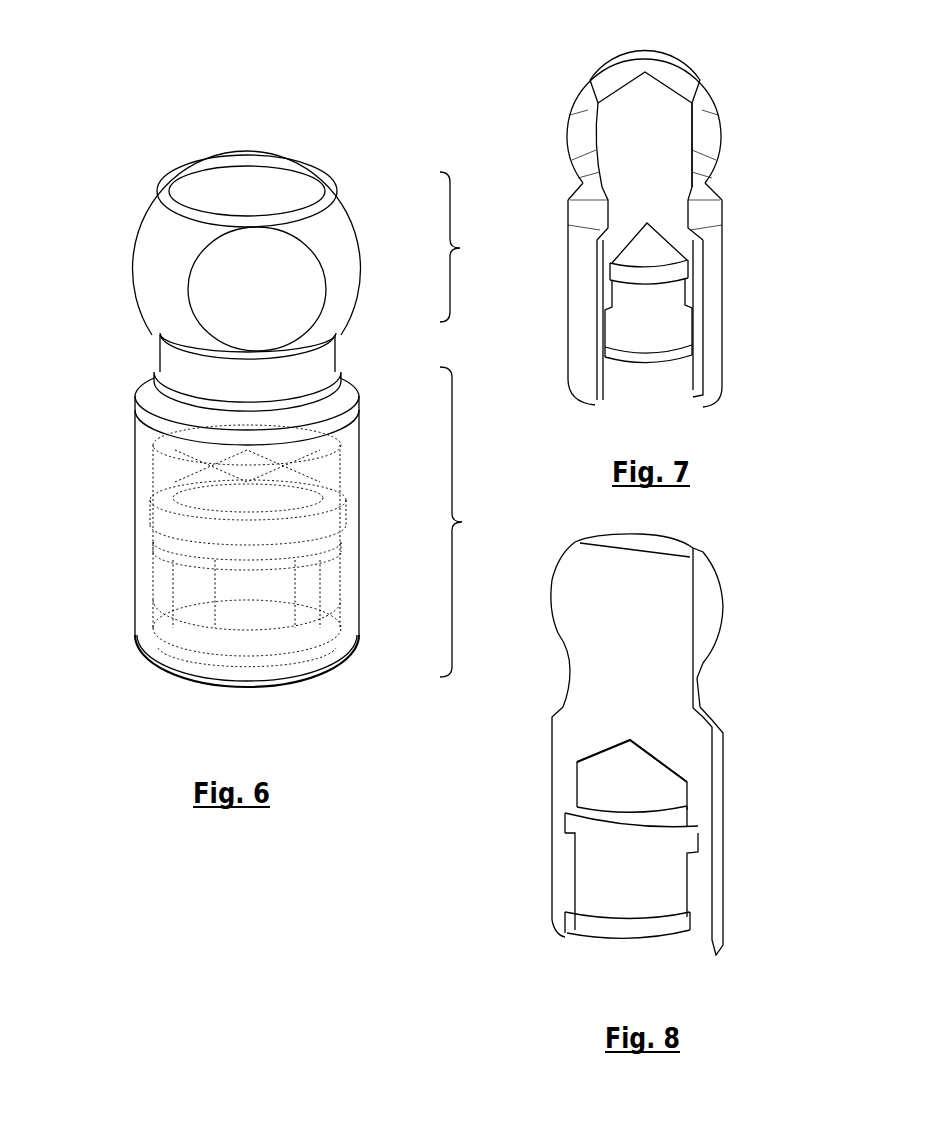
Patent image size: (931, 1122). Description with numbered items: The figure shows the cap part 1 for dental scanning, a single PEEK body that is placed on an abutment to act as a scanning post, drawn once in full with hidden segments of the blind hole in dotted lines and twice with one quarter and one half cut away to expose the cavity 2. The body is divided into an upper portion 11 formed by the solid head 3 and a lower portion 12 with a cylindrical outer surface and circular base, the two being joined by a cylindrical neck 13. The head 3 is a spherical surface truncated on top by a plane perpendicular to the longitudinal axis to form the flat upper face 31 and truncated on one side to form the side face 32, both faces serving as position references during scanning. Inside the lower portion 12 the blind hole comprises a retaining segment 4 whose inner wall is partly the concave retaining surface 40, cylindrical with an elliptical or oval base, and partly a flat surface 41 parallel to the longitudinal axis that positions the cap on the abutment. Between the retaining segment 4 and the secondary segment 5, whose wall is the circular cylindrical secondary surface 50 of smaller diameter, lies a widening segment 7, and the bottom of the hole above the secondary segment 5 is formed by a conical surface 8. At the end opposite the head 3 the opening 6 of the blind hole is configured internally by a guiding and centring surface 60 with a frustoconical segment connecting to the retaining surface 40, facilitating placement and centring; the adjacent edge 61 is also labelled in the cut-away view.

In FIG. 6, the cap part 1 is at (157, 105).
In FIG. 7, the cap part 1 is at (523, 88).
In FIG. 8, the cap part 1 is at (402, 923).
In FIG. 6, the cavity 2 is at (249, 702).
In FIG. 7, the cavity 2 is at (648, 362).
In FIG. 8, the cavity 2 is at (630, 940).
In FIG. 6, the head 3 is at (172, 250).
In FIG. 7, the head 3 is at (580, 130).
In FIG. 8, the head 3 is at (632, 612).
In FIG. 6, the retaining segment 4 is at (250, 580).
In FIG. 8, the retaining segment 4 is at (613, 883).
In FIG. 6, the secondary segment 5 is at (253, 497).
In FIG. 8, the secondary segment 5 is at (612, 787).
In FIG. 6, the opening 6 is at (285, 677).
In FIG. 7, the opening 6 is at (695, 396).
In FIG. 8, the opening 6 is at (637, 831).
In FIG. 6, the widening segment 7 is at (297, 542).
In FIG. 8, the widening segment 7 is at (620, 818).
In FIG. 8, the conical surface 8 is at (627, 746).
In FIG. 6, the upper portion 11 is at (471, 247).
In FIG. 6, the lower portion 12 is at (467, 522).
In FIG. 6, the cylindrical neck 13 is at (315, 358).
In FIG. 6, the flat upper face 31 is at (238, 182).
In FIG. 7, the flat upper face 31 is at (623, 70).
In FIG. 6, the side face 32 is at (297, 258).
In FIG. 7, the side face 32 is at (707, 147).
In FIG. 8, the side face 32 is at (710, 622).
In FIG. 7, the retaining surface 40 is at (663, 326).
In FIG. 8, the retaining surface 40 is at (665, 866).
In FIG. 6, the flat surface 41 is at (237, 630).
In FIG. 8, the secondary surface 50 is at (655, 788).
In FIG. 7, the guiding and centring surface 60 is at (693, 397).
In FIG. 8, the guiding and centring surface 60 is at (697, 937).
In FIG. 8, the sleeve bottom inner edge 61 is at (583, 930).